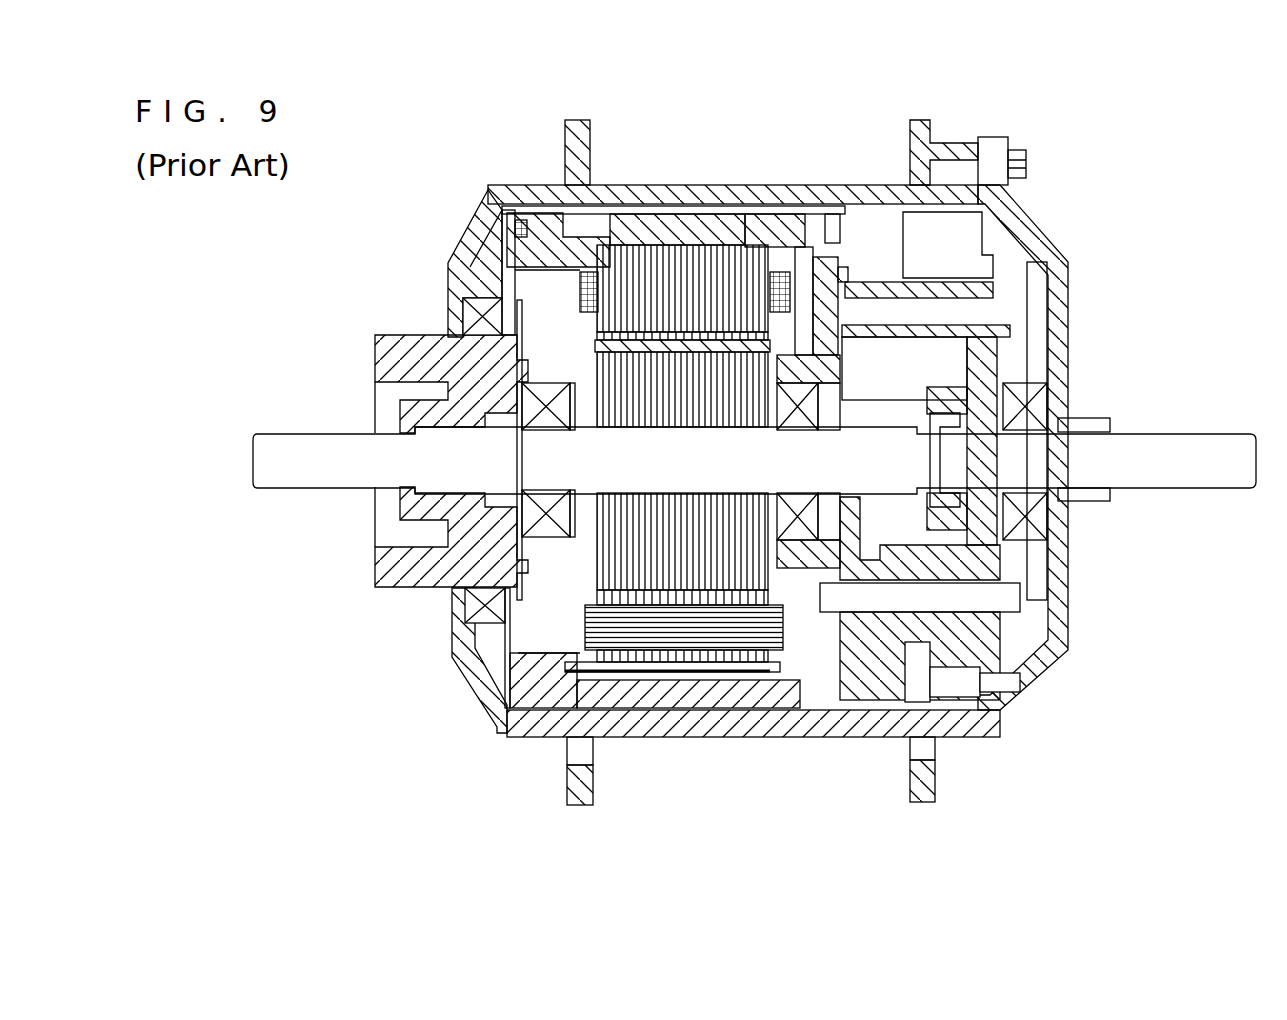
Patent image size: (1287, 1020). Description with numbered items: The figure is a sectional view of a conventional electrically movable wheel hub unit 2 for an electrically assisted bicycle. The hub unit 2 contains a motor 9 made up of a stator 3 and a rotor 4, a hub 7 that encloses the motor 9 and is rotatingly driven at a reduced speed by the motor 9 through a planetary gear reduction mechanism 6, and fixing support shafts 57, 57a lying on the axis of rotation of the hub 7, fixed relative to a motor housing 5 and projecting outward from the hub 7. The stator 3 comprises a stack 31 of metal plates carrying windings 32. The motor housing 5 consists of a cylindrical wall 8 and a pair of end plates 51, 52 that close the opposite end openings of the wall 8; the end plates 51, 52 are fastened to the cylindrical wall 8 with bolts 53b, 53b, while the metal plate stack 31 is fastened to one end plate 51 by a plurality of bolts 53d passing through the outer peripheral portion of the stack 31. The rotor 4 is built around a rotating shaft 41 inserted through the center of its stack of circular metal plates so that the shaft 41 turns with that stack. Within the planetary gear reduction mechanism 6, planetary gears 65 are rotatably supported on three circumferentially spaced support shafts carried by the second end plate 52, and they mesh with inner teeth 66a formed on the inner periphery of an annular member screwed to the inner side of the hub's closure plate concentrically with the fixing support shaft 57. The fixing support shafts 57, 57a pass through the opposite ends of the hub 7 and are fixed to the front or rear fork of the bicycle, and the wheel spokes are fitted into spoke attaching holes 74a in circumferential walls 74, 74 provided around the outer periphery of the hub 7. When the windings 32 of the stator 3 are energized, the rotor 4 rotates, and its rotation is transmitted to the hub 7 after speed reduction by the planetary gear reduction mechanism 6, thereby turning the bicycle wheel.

The electrically movable wheel hub unit 2 is at (1048, 207).
The stator 3 is at (426, 95).
The metal plate stack 31 is at (580, 260).
The windings 32 is at (588, 372).
The rotor 4 is at (490, 288).
The rotating shaft 41 is at (480, 602).
The motor housing 5 is at (760, 70).
The end plate 51 is at (600, 185).
The end plate 52 is at (828, 263).
The bolts 53b is at (557, 227).
The bolts 53d is at (738, 660).
The fixing support shaft 57 is at (325, 497).
The fixing support shaft 57a is at (1177, 497).
The planetary gear reduction mechanism 6 is at (903, 514).
The planetary gear 65 is at (890, 625).
The inner teeth 66a is at (1050, 665).
The hub 7 is at (870, 175).
The circumferential wall 74 is at (585, 790).
The spoke attaching hole 74a is at (580, 770).
The cylindrical wall 8 is at (680, 200).
The motor 9 is at (578, 458).